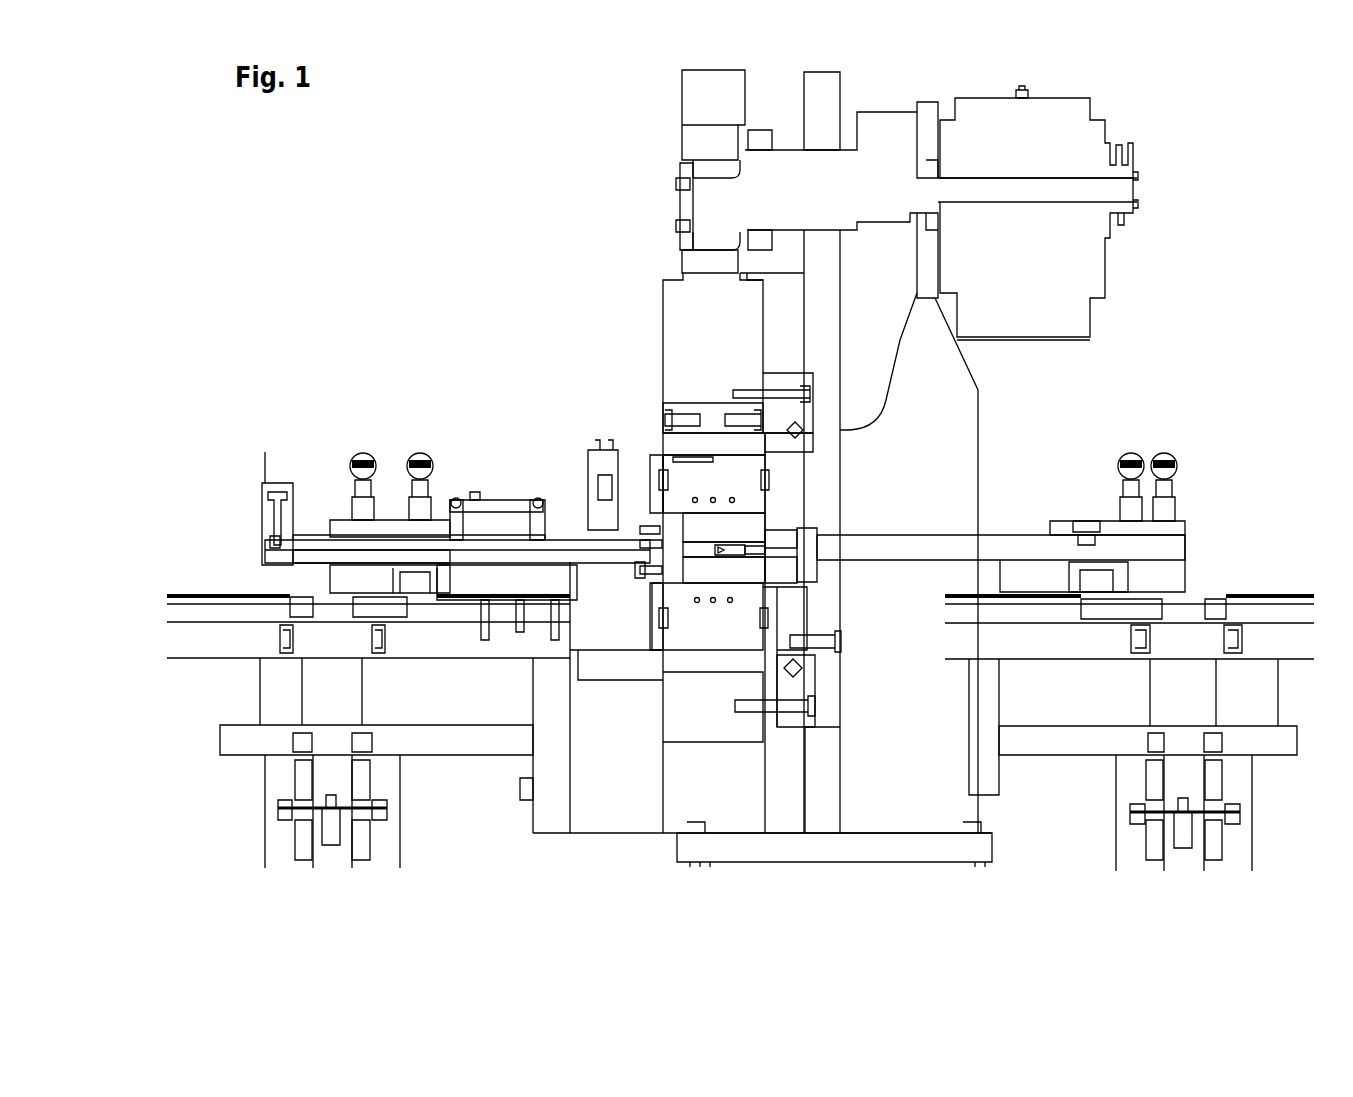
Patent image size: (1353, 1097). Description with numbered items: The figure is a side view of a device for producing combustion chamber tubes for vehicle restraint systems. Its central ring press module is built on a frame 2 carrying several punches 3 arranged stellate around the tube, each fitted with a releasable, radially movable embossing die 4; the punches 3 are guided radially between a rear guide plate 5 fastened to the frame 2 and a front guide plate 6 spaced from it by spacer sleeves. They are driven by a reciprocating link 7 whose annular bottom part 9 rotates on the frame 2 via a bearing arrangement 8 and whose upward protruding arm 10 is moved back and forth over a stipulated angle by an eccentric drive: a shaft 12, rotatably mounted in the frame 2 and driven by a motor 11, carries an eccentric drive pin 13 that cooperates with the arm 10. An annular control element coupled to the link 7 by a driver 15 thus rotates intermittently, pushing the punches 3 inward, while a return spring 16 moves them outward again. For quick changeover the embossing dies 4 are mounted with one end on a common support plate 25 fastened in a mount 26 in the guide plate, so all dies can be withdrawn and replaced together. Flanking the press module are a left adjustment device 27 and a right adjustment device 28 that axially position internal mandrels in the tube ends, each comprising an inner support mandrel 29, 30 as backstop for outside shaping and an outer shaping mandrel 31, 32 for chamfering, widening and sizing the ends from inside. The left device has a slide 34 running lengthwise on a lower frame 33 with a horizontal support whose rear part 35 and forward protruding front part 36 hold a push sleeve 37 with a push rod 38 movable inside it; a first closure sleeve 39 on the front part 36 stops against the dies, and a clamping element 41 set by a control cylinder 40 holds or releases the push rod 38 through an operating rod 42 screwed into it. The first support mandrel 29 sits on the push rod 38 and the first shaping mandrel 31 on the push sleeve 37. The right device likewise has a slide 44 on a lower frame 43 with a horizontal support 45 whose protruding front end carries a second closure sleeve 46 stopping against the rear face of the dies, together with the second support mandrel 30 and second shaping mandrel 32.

The frame 2 is at (820, 326).
The punches 3 is at (670, 455).
The embossing dies 4 is at (758, 524).
The rear guide plate 5 is at (776, 620).
The front guide plate 6 is at (655, 603).
The reciprocating link 7 is at (655, 298).
The bearing arrangement 8 is at (800, 430).
The annular bottom part 9 is at (680, 706).
The arm 10 is at (700, 106).
The motor 11 is at (1075, 136).
The shaft 12 is at (870, 160).
The eccentric drive pin 13 is at (710, 206).
The driver 15 is at (670, 410).
The return spring 16 is at (662, 480).
The support plate 25 is at (650, 528).
The mount 26 is at (660, 586).
The adjustment device 27 is at (300, 450).
The adjustment device 28 is at (1197, 498).
The inner support mandrel 29 is at (680, 546).
The inner support mandrel 30 is at (738, 560).
The outer shaping mandrel 31 is at (655, 556).
The outer shaping mandrel 32 is at (770, 546).
The lower frame 33 is at (428, 640).
The slide 34 is at (347, 520).
The rear part 35 is at (395, 535).
The front part 36 is at (538, 540).
The push sleeve 37 is at (520, 545).
The push rod 38 is at (472, 550).
The first closure sleeve 39 is at (650, 541).
The control cylinder 40 is at (272, 491).
The clamping element 41 is at (270, 542).
The operating rod 42 is at (318, 548).
The lower frame 43 is at (1080, 636).
The slide 44 is at (1056, 520).
The horizontal support 45 is at (943, 548).
The second closure sleeve 46 is at (798, 580).